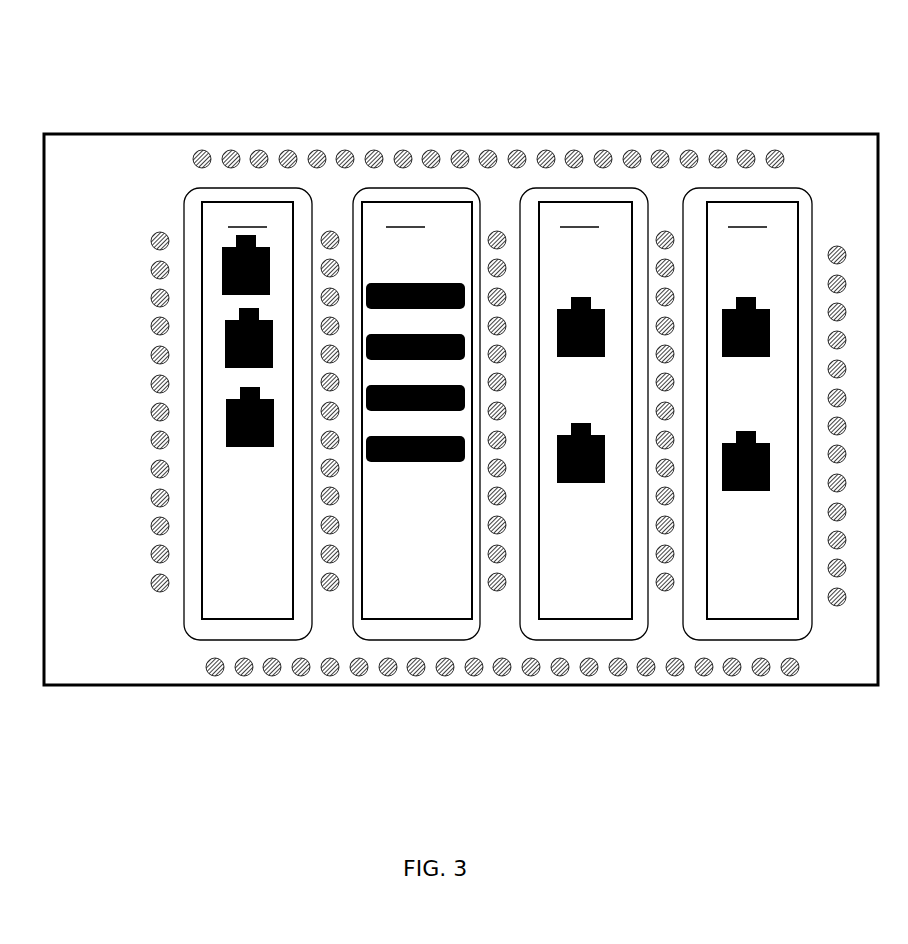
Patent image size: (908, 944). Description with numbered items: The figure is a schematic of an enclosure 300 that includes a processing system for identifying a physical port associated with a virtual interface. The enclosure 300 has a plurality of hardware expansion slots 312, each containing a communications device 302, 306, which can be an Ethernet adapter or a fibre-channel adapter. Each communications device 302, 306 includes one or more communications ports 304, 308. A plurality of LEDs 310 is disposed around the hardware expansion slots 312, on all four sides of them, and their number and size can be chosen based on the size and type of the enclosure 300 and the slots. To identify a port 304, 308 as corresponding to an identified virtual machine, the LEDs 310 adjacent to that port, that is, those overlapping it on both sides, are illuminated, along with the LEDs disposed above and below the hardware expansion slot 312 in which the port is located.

The enclosure 300 is at (535, 72).
The communications device 302 is at (500, 410).
The communications port 304 is at (258, 451).
The communications device 306 is at (417, 410).
The communications port 308 is at (413, 465).
The LEDs 310 is at (191, 158).
The hardware expansion slot 312 is at (251, 189).